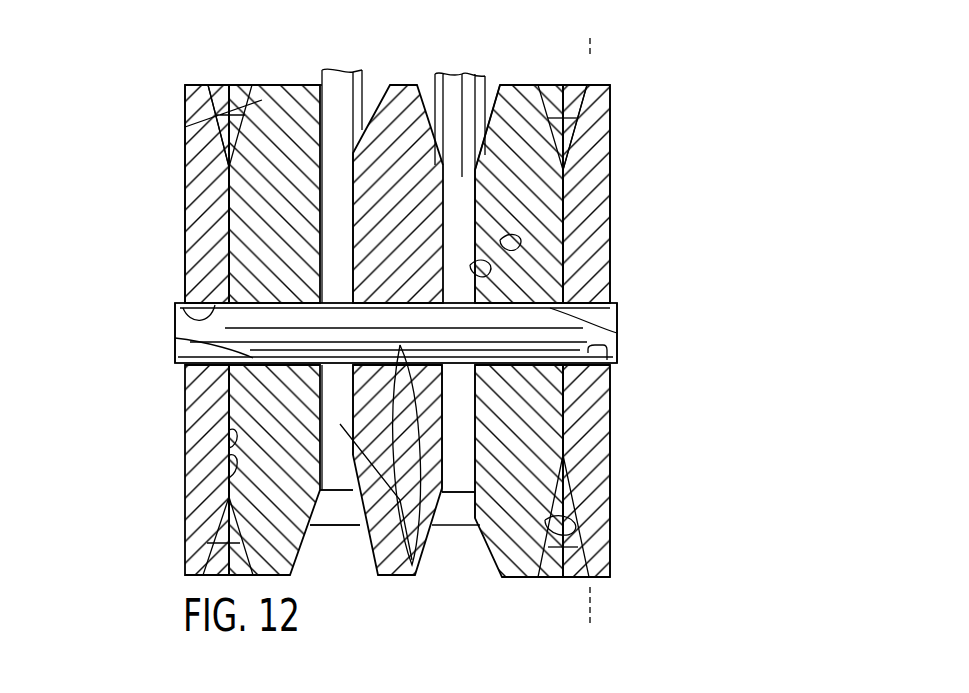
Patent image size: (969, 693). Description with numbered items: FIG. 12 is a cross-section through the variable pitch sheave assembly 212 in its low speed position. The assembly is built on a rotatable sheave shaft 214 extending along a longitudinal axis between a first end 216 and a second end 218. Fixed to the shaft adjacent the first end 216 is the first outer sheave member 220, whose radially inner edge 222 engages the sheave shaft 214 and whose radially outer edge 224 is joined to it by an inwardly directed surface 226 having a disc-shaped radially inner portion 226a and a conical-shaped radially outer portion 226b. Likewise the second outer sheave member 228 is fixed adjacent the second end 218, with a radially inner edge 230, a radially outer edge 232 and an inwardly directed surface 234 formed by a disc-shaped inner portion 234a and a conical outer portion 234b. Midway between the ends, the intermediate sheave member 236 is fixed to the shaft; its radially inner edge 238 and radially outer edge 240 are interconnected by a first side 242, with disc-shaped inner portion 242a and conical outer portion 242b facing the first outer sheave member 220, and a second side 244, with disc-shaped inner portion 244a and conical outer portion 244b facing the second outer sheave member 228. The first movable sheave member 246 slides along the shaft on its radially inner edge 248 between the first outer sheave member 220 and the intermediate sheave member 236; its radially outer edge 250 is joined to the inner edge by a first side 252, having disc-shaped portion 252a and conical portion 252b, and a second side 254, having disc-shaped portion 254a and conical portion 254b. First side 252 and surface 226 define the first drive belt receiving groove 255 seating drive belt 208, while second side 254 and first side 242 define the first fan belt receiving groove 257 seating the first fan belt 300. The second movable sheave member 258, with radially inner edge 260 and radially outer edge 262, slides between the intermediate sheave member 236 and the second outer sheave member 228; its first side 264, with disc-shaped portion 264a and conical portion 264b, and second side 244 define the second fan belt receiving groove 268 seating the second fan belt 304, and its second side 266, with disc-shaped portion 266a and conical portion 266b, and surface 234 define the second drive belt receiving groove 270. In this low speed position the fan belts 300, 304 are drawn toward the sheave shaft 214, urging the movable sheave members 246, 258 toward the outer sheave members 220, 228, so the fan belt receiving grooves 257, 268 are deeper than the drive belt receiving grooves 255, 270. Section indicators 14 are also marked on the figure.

The section line 14 is at (590, 38).
The drive belt 208 is at (215, 83).
The variable pitch sheave assembly 212 is at (88, 428).
The sheave shaft 214 is at (185, 322).
The first end 216 is at (175, 304).
The second end 218 is at (624, 308).
The first outer sheave member 220 is at (190, 200).
The radially inner edge 222 is at (170, 305).
The radially outer edge 224 is at (193, 578).
The inwardly directed surface 226 is at (215, 425).
The disc-shaped radially inner portion 226a is at (233, 454).
The conical-shaped radially outer portion 226b is at (265, 83).
The second outer sheave member 228 is at (590, 460).
The radially inner edge 230 is at (612, 352).
The radially outer edge 232 is at (595, 87).
The inwardly directed surface 234 is at (612, 433).
The disc-shaped radially inner portion 234a is at (612, 195).
The conical-shaped radially outer portion 234b is at (573, 588).
The intermediate sheave member 236 is at (398, 540).
The radially inner edge 238 is at (436, 525).
The radially outer edge 240 is at (380, 85).
The first side 242 is at (355, 520).
The disc-shaped radially inner portion 242a is at (333, 200).
The conical-shaped outer portion 242b is at (362, 130).
The second side 244 is at (465, 530).
The disc-shaped radially inner portion 244a is at (463, 100).
The conical-shaped radially outer portion 244b is at (440, 190).
The first movable sheave member 246 is at (237, 83).
The radially inner edge 248 is at (175, 338).
The radially outer edge 250 is at (240, 83).
The first side 252 is at (227, 165).
The disc-shaped radially inner portion 252a is at (235, 445).
The conical-shaped radially outer portion 252b is at (185, 127).
The second side 254 is at (335, 520).
The disc-shaped radially inner portion 254a is at (320, 130).
The conical-shaped radially outer portion 254b is at (321, 535).
The first drive belt receiving groove 255 is at (228, 525).
The first fan belt receiving groove 257 is at (434, 565).
The second movable sheave member 258 is at (583, 86).
The radially inner edge 260 is at (617, 331).
The radially outer edge 262 is at (517, 86).
The first side 264 is at (483, 525).
The disc-shaped radially inner portion 264a is at (510, 245).
The conical-shaped radially outer portion 264b is at (478, 160).
The second side 266 is at (568, 482).
The disc-shaped radially inner portion 266a is at (565, 272).
The conical-shaped radially outer portion 266b is at (560, 528).
The second fan belt receiving groove 268 is at (583, 165).
The second drive belt receiving groove 270 is at (518, 110).
The first fan belt 300 is at (330, 497).
The second fan belt 304 is at (547, 580).